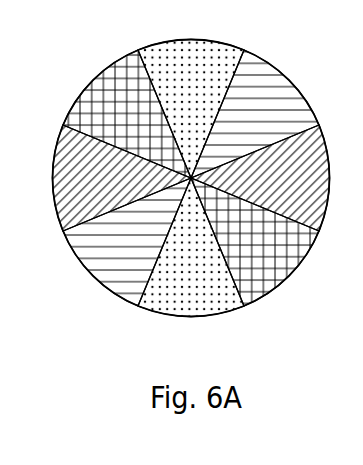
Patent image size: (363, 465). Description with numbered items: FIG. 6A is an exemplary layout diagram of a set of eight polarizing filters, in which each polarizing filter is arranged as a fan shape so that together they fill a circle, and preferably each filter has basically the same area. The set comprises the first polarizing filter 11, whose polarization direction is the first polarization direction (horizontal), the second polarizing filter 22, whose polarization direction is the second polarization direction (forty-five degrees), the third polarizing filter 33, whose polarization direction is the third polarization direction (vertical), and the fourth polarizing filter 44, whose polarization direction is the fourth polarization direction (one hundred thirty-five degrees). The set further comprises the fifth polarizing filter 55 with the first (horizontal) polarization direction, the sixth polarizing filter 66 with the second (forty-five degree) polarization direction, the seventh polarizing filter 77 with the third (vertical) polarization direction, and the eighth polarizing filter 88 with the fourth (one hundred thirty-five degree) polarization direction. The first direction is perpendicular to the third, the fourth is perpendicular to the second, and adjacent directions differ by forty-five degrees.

The first polarizing filter 11 is at (276, 178).
The second polarizing filter 22 is at (258, 114).
The third polarizing filter 33 is at (191, 91).
The fourth polarizing filter 44 is at (125, 114).
The fifth polarizing filter 55 is at (103, 178).
The sixth polarizing filter 66 is at (127, 245).
The seventh polarizing filter 77 is at (191, 264).
The eighth polarizing filter 88 is at (255, 242).